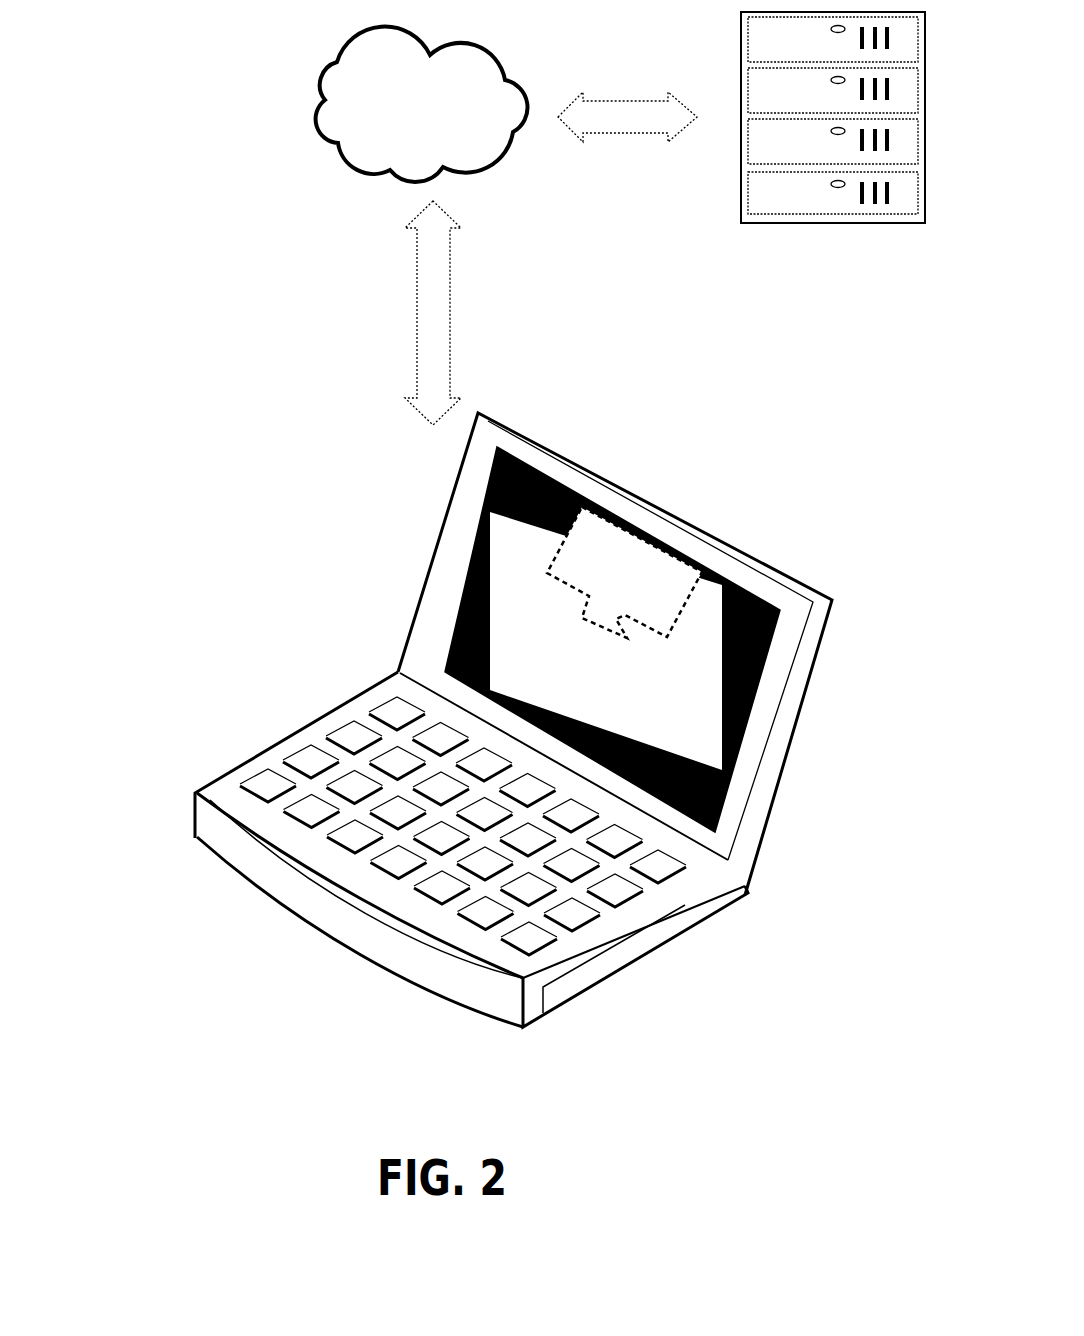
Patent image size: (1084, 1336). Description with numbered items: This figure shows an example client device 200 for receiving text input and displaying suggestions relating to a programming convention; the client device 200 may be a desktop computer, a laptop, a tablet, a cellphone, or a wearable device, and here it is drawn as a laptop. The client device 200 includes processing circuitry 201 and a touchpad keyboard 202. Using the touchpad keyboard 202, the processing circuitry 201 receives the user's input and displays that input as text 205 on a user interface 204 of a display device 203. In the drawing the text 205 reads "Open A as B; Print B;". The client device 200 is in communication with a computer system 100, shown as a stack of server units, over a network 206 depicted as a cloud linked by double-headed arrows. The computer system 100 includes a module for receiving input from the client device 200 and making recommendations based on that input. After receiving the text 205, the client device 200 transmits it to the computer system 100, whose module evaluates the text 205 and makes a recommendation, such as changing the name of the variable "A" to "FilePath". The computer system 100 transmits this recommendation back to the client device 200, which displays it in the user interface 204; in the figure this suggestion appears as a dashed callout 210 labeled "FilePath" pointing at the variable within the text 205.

The computer system 100 is at (832, 250).
The client device 200 is at (607, 1025).
The processing circuitry 201 is at (312, 932).
The touchpad keyboard 202 is at (712, 770).
The display device 203 is at (460, 665).
The user interface 204 is at (510, 527).
The text 205 is at (500, 625).
The network 206 is at (422, 103).
The file path 210 is at (624, 572).